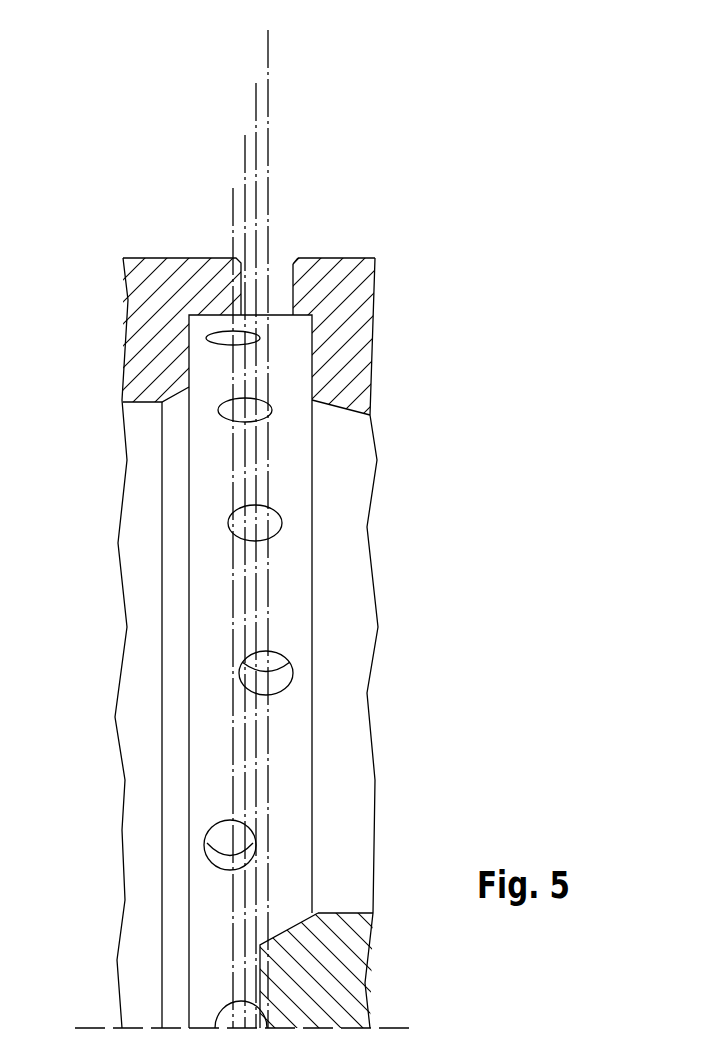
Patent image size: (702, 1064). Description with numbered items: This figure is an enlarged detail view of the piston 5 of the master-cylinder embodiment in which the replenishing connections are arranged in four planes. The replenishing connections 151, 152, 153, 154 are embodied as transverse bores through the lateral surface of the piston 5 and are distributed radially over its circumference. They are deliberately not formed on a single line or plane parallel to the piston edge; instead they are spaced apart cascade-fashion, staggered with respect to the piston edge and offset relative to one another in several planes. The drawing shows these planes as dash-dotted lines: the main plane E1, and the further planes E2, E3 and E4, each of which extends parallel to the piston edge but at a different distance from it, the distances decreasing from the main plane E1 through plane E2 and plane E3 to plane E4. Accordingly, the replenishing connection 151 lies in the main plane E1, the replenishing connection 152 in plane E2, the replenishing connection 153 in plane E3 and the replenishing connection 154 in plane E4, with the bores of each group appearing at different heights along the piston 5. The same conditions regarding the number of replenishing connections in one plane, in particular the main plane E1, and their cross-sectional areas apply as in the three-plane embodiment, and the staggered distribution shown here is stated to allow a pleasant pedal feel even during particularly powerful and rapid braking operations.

The piston 5 is at (354, 251).
The replenishing connection 151 is at (413, 674).
The replenishing connection 152 is at (276, 525).
The replenishing connection 153 is at (223, 1020).
The replenishing connection 154 is at (220, 835).
The main plane E1 is at (252, 39).
The plane E2 is at (240, 91).
The plane E3 is at (229, 142).
The plane E4 is at (217, 194).